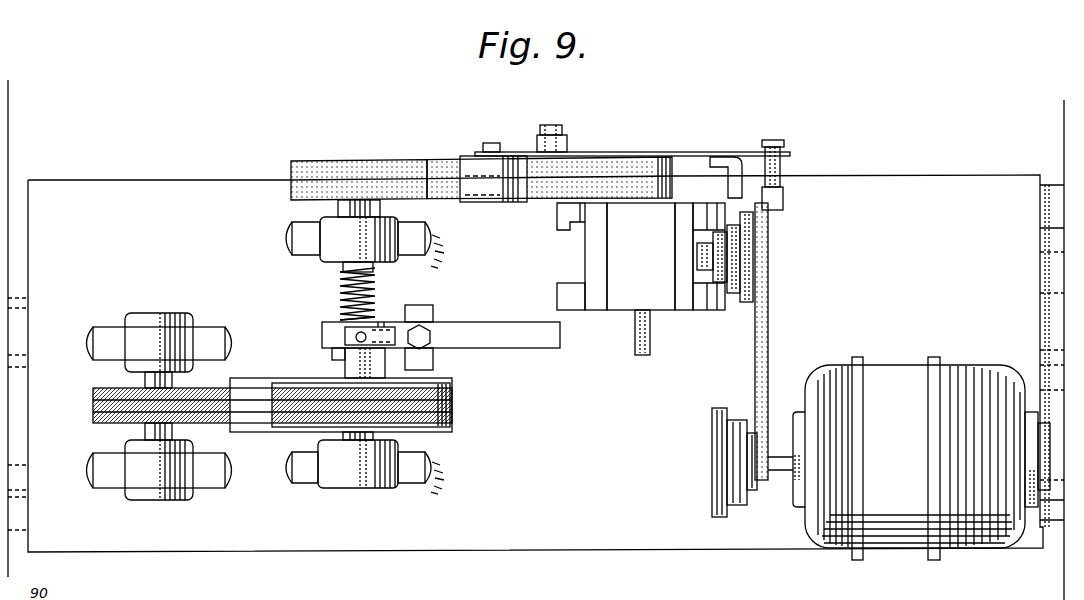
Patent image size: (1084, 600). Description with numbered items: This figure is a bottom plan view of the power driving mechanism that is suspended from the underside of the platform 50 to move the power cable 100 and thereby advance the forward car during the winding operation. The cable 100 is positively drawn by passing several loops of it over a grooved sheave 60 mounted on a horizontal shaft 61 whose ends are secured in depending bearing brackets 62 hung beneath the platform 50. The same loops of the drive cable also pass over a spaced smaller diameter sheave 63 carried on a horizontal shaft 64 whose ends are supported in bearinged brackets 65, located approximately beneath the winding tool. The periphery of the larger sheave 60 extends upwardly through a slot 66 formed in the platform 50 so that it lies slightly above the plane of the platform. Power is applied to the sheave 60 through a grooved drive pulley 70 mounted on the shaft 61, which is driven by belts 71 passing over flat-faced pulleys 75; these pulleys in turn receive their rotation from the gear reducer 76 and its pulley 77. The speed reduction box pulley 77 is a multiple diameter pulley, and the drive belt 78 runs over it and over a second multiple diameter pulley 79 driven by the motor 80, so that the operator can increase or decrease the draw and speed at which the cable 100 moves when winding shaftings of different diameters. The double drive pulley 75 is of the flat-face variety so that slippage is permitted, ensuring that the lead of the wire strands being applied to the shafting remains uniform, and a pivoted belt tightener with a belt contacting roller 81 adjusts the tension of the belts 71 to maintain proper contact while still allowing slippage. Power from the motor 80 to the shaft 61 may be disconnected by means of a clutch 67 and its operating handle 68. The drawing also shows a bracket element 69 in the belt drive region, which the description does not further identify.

The platform 50 is at (945, 180).
The grooved sheave 60 is at (438, 425).
The horizontal shaft 61 is at (353, 433).
The bearing brackets 62 is at (385, 480).
The smaller diameter sheave 63 is at (218, 384).
The horizontal shaft 64 is at (157, 379).
The bearinged brackets 65 is at (180, 303).
The slot 66 is at (452, 402).
The clutch 67 is at (385, 321).
The operating handle 68 is at (475, 332).
The bracket 69 is at (753, 141).
The grooved drive pulley 70 is at (370, 145).
The belts 71 is at (438, 161).
The flat-faced pulleys 75 is at (683, 140).
The gear reducer 76 is at (660, 297).
The speed reduction box pulley 77 is at (768, 255).
The drive belt 78 is at (768, 340).
The multiple diameter pulley 79 is at (712, 440).
The motor 80 is at (900, 365).
The belt contacting roller 81 is at (502, 207).
The power cable 100 is at (450, 390).